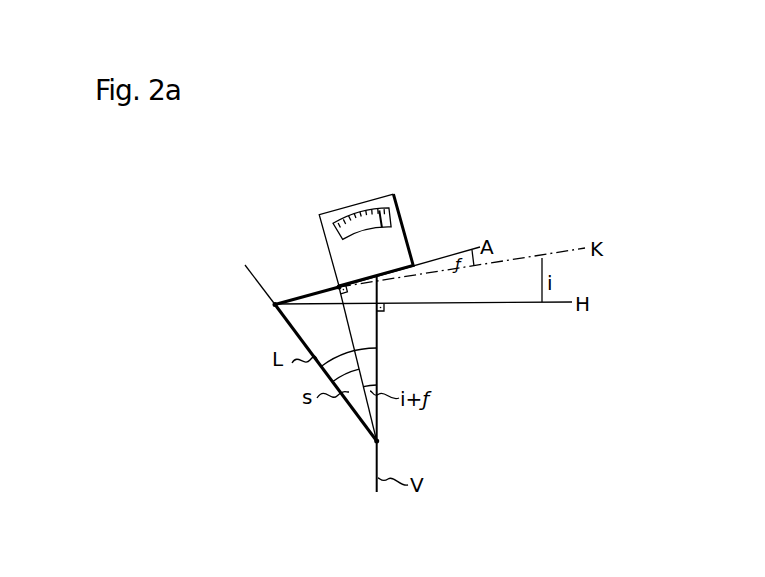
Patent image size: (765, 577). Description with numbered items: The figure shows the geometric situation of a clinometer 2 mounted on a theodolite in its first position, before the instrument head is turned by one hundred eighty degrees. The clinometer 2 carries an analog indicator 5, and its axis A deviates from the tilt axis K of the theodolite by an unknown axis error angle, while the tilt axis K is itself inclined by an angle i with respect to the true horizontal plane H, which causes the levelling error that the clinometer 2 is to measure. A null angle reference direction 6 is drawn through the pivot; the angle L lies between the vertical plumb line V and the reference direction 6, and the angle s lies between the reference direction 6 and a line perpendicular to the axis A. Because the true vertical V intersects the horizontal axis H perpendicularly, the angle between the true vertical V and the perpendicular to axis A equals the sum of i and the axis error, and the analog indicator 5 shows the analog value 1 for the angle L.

The analog value 1 is at (388, 211).
The clinometer 2 is at (403, 246).
The analog indicator 5 is at (337, 233).
The null angle reference direction 6 is at (258, 291).